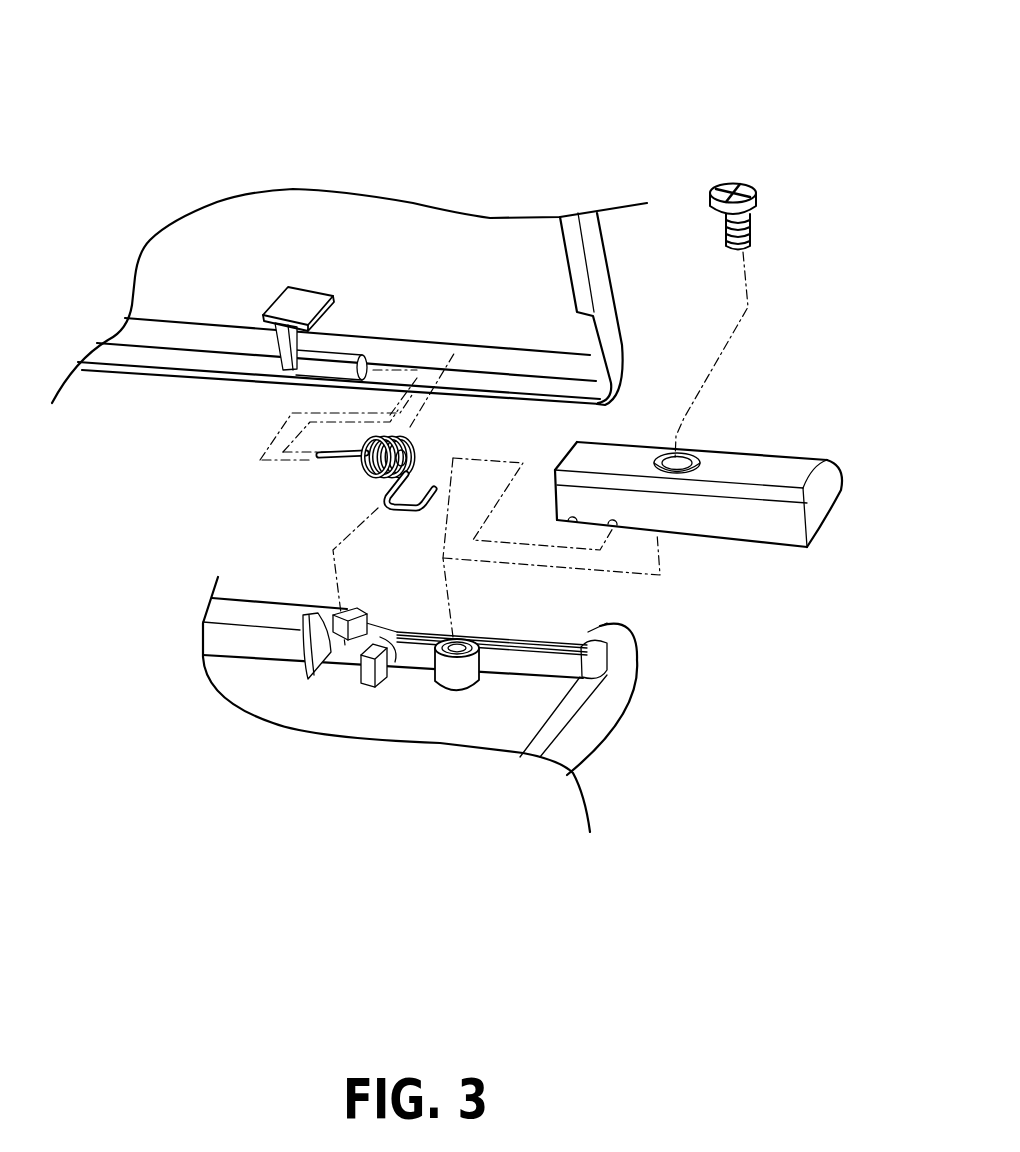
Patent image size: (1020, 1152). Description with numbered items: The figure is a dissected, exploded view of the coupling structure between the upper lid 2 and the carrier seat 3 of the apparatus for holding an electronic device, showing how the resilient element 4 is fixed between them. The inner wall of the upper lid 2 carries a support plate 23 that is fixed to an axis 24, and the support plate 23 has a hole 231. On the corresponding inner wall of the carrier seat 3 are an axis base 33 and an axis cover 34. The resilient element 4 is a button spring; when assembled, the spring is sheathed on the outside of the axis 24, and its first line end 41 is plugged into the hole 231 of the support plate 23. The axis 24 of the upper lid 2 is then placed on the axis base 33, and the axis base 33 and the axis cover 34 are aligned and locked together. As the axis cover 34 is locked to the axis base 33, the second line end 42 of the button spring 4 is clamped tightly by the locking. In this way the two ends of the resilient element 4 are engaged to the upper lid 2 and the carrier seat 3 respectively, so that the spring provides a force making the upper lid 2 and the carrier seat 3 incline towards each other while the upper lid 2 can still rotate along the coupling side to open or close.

The upper lid 2 is at (490, 290).
The support plate 23 is at (283, 347).
The hole 231 is at (276, 335).
The axis 24 is at (363, 350).
The carrier seat 3 is at (503, 710).
The axis base 33 is at (363, 668).
The axis cover 34 is at (753, 525).
The resilient element 4 is at (306, 514).
The first line end 41 is at (320, 463).
The second line end 42 is at (388, 510).